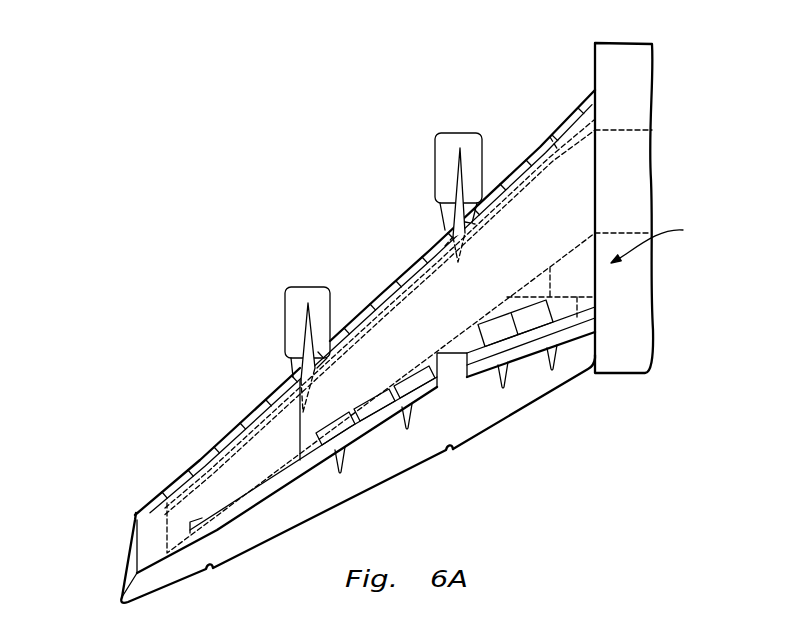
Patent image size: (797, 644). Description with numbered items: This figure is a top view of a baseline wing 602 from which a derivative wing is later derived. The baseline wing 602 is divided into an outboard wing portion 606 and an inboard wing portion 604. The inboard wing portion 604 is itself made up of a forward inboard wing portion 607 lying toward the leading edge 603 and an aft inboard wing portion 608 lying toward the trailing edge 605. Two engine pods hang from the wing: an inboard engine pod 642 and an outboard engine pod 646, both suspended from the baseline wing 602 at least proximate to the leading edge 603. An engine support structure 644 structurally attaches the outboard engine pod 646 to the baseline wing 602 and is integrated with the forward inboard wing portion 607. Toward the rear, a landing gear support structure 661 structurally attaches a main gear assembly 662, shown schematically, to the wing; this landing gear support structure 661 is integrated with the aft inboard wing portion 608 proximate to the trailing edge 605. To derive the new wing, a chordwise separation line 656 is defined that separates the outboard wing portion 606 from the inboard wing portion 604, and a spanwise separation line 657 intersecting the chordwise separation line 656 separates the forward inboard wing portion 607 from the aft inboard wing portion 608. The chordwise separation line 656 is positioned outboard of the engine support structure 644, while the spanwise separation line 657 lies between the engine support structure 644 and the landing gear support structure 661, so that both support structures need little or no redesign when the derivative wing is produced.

The baseline wing 602 is at (135, 514).
The leading edge 603 is at (380, 295).
The inboard wing portion 604 is at (450, 447).
The trailing edge 605 is at (241, 529).
The outboard wing portion 606 is at (211, 569).
The forward inboard wing portion 607 is at (532, 210).
The aft inboard wing portion 608 is at (583, 275).
The inboard engine pod 642 is at (435, 157).
The engine support structure 644 is at (300, 381).
The outboard engine pod 646 is at (285, 302).
The chordwise separation line 656 is at (297, 428).
The spanwise separation line 657 is at (490, 306).
The landing gear support structure 661 is at (577, 310).
The main gear assembly 662 is at (665, 240).